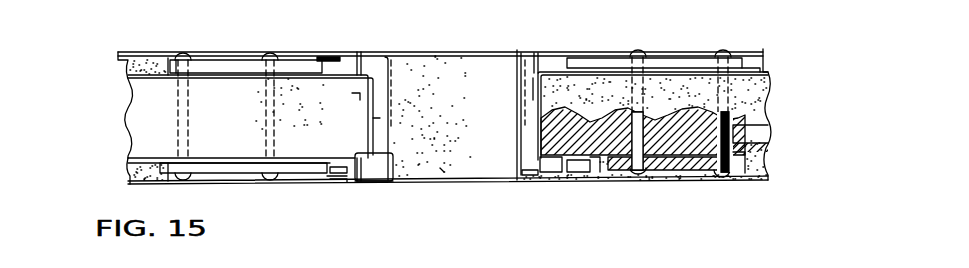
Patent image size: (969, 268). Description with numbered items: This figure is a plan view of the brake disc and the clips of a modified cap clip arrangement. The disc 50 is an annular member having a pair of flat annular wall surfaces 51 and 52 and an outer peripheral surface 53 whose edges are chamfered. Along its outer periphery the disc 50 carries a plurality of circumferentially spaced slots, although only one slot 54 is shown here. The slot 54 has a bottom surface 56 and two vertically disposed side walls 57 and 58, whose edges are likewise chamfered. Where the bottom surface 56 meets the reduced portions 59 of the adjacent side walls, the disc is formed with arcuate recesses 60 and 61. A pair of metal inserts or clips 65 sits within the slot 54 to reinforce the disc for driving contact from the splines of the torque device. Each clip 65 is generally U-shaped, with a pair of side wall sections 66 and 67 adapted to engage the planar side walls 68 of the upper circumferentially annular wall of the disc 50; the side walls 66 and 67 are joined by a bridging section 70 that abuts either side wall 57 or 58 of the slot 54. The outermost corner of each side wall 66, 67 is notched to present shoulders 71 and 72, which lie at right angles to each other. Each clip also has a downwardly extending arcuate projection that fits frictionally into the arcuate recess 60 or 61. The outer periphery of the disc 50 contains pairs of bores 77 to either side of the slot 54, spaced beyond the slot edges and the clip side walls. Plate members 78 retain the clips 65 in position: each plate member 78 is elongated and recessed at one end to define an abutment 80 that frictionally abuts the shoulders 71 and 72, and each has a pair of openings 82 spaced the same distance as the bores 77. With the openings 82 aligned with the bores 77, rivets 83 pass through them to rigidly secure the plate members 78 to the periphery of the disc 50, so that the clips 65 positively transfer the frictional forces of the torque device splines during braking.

The disc 50 is at (127, 113).
The flat annular wall surface 51 is at (752, 181).
The flat annular wall surface 52 is at (753, 47).
The outer peripheral surface 53 is at (752, 95).
The slot 54 is at (473, 183).
The bottom surface 56 is at (442, 170).
The side wall 57 is at (373, 118).
The side wall 58 is at (533, 83).
The reduced portion 59 is at (217, 163).
The arcuate recess 60 is at (367, 175).
The arcuate recess 61 is at (541, 182).
The clip 65 is at (377, 51).
The side wall section 66 is at (183, 55).
The side wall section 67 is at (360, 63).
The planar side wall 68 is at (138, 64).
The bridging section 70 is at (393, 90).
The shoulder 71 is at (342, 172).
The shoulder 72 is at (593, 161).
The bore 77 is at (171, 132).
The plate member 78 is at (207, 61).
The abutment 80 is at (328, 63).
The opening 82 is at (770, 153).
The rivet 83 is at (270, 56).